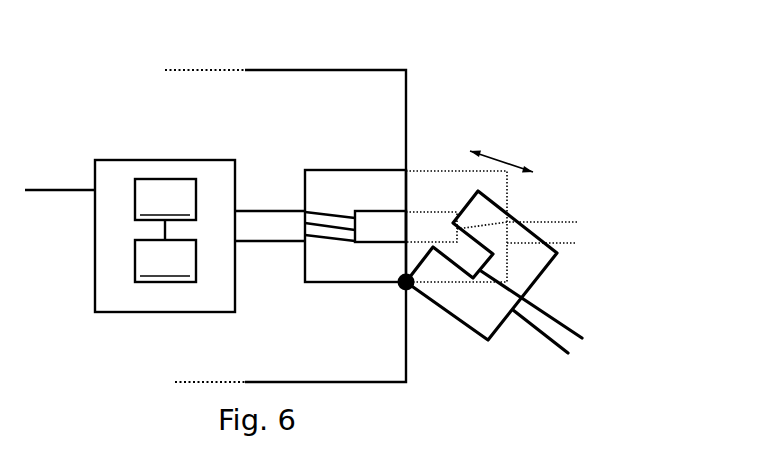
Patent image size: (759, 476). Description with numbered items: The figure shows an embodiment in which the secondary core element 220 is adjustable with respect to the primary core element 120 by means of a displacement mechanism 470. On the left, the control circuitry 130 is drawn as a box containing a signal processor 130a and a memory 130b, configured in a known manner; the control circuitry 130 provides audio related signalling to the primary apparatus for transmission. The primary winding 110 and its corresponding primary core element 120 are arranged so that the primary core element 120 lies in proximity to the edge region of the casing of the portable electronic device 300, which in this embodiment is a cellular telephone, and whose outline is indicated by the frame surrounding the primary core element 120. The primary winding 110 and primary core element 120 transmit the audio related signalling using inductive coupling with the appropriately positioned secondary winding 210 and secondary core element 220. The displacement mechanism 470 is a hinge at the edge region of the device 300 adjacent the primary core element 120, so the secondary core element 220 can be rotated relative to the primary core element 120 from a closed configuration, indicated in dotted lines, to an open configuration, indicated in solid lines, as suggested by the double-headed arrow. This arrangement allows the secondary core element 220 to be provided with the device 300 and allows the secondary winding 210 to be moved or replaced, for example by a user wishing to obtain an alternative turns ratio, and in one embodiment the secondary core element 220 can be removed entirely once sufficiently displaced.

The primary winding 110 is at (345, 210).
The primary core element 120 is at (335, 262).
The control circuitry 130 is at (165, 211).
The signal processor 130a is at (165, 199).
The memory 130b is at (165, 261).
The secondary winding 210 is at (507, 283).
The secondary core element 220 is at (487, 302).
The portable electronic device 300 is at (305, 80).
The displacement mechanism 470 is at (410, 297).